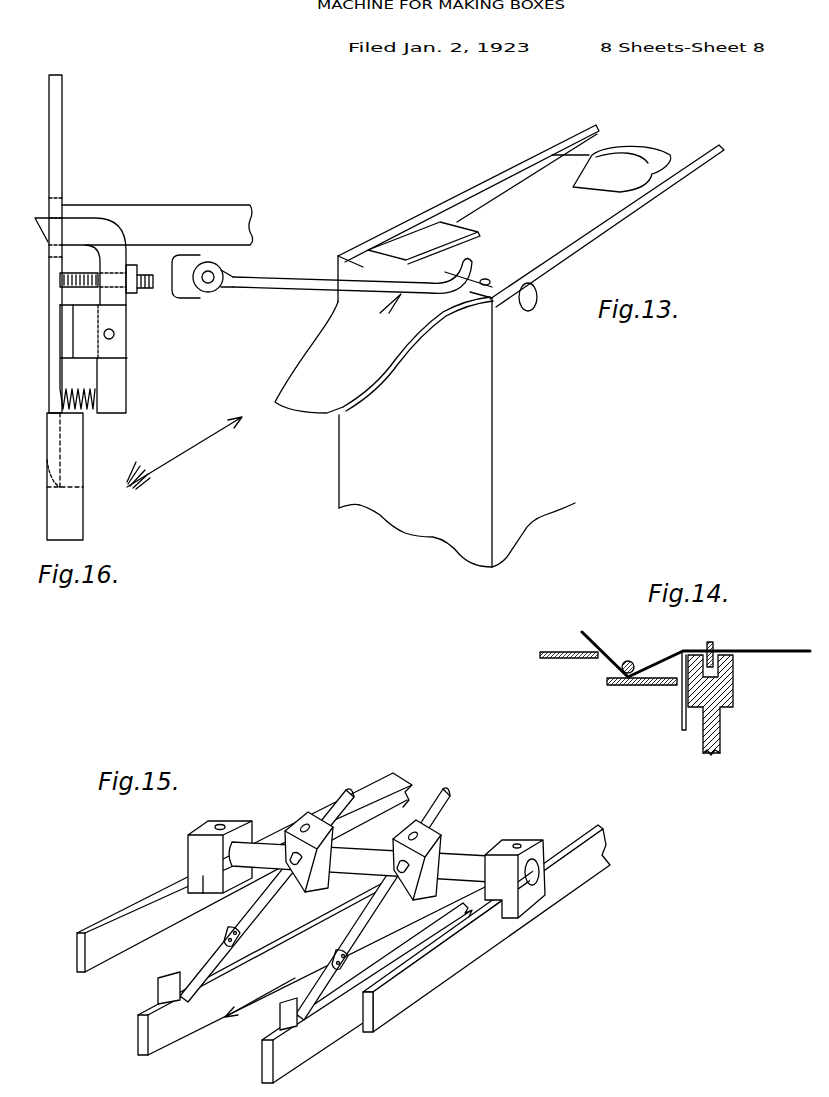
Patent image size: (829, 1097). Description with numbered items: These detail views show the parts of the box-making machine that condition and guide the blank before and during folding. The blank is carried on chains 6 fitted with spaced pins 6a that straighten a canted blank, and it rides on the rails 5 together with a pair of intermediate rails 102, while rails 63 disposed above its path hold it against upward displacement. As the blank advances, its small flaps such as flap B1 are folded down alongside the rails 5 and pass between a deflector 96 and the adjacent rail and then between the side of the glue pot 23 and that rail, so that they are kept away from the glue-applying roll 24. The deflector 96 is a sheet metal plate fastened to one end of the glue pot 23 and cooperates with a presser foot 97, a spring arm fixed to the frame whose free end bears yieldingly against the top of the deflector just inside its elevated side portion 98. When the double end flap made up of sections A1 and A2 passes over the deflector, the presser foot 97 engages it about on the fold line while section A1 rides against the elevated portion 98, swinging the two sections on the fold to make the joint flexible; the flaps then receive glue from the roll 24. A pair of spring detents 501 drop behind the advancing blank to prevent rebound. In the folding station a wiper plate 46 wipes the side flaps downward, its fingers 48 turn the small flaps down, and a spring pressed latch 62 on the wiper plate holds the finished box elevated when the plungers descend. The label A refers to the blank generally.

In FIG. 16, the folders or wiper plates 46 is at (62, 120).
In FIG. 16, the spring pressed latch 62 is at (108, 233).
In FIG. 16, the finger 48 is at (65, 476).
In FIG. 13, the glue pot 23 is at (531, 346).
In FIG. 13, the elevated side portion 98 is at (423, 243).
In FIG. 14, the elevated side portion 98 is at (565, 659).
In FIG. 13, the deflector 96 is at (384, 353).
In FIG. 14, the deflector 96 is at (640, 686).
In FIG. 13, the presser foot 97 is at (289, 277).
In FIG. 14, the presser foot 97 is at (628, 661).
In FIG. 13, the glue-applying roll 24 is at (665, 168).
In FIG. 14, the chain 6 is at (720, 676).
In FIG. 14, the pin or stud 6a is at (730, 634).
In FIG. 14, the rail 5 is at (722, 722).
In FIG. 14, the blank A is at (770, 631).
In FIG. 14, the end flap section A2 is at (663, 650).
In FIG. 14, the end flap section A1 is at (590, 633).
In FIG. 14, the flap B1 is at (680, 713).
In FIG. 15, the rail 63 is at (85, 965).
In FIG. 15, the intermediate rail 102 is at (262, 1065).
In FIG. 15, the spring detent 501 is at (175, 963).